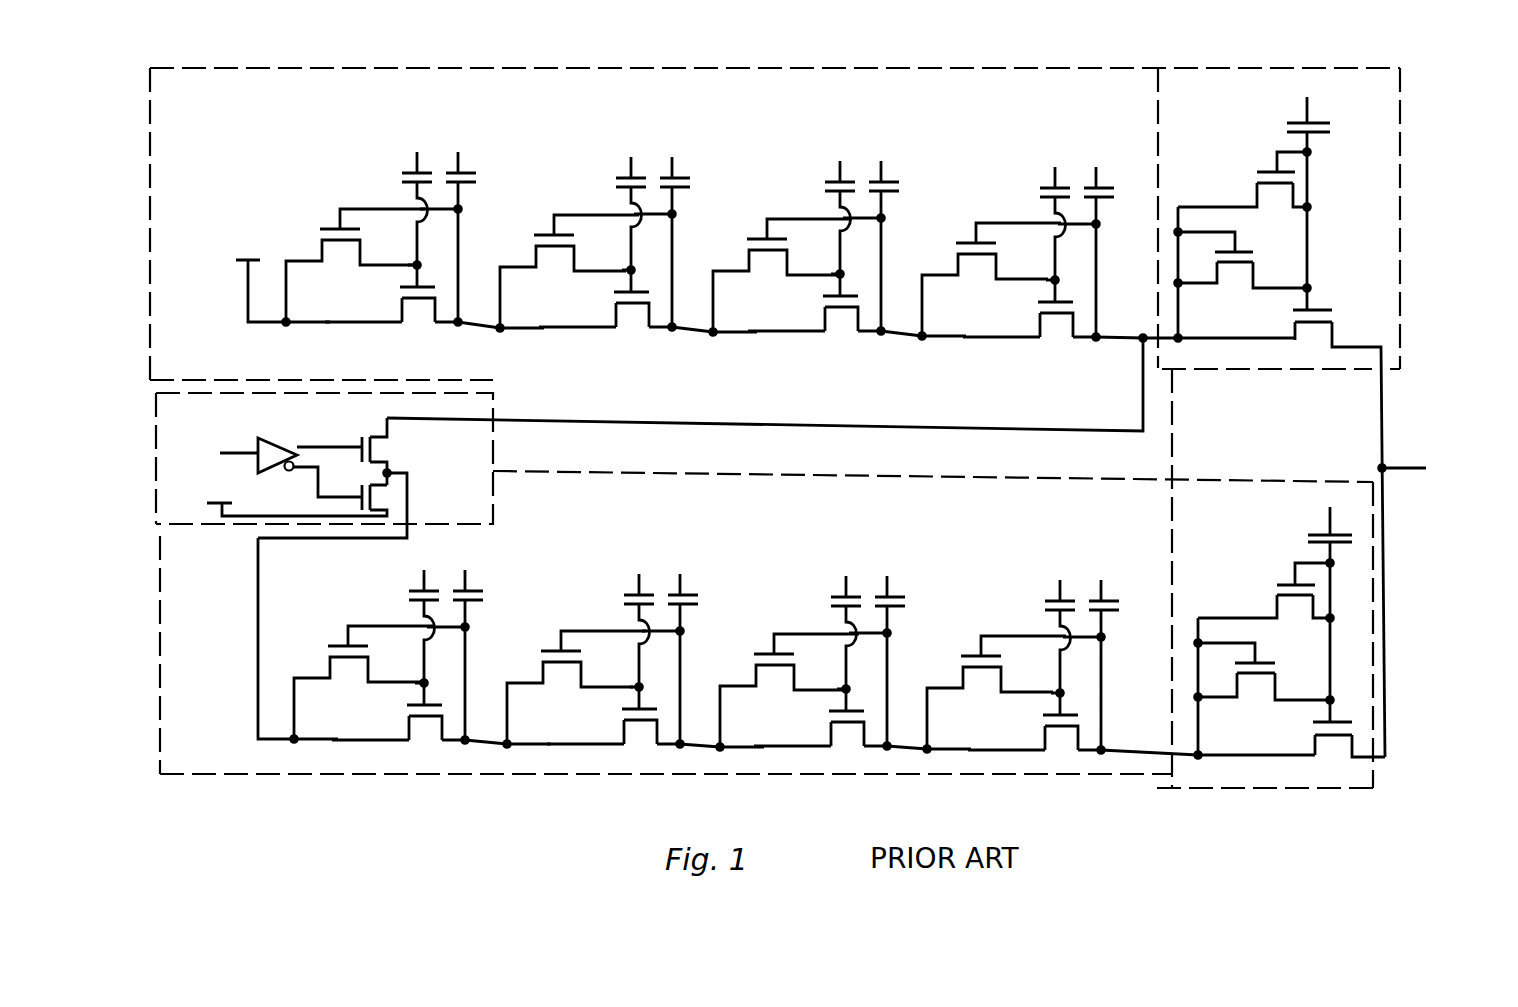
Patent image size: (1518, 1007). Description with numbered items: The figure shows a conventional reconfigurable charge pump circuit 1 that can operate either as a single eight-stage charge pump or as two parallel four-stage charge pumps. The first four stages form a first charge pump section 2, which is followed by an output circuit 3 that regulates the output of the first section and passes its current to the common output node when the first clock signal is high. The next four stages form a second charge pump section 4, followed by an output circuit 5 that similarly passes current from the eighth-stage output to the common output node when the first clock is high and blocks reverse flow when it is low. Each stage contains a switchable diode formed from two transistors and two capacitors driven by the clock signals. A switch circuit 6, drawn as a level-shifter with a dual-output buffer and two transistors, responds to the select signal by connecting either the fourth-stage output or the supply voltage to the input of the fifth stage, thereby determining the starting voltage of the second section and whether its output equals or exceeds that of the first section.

The reconfigurable charge pump circuit 1 is at (426, 804).
The first charge pump section 2 is at (240, 118).
The output circuit 3 is at (1225, 120).
The second charge pump section 4 is at (213, 586).
The output circuit 5 is at (1228, 548).
The switch circuit 6 is at (192, 428).